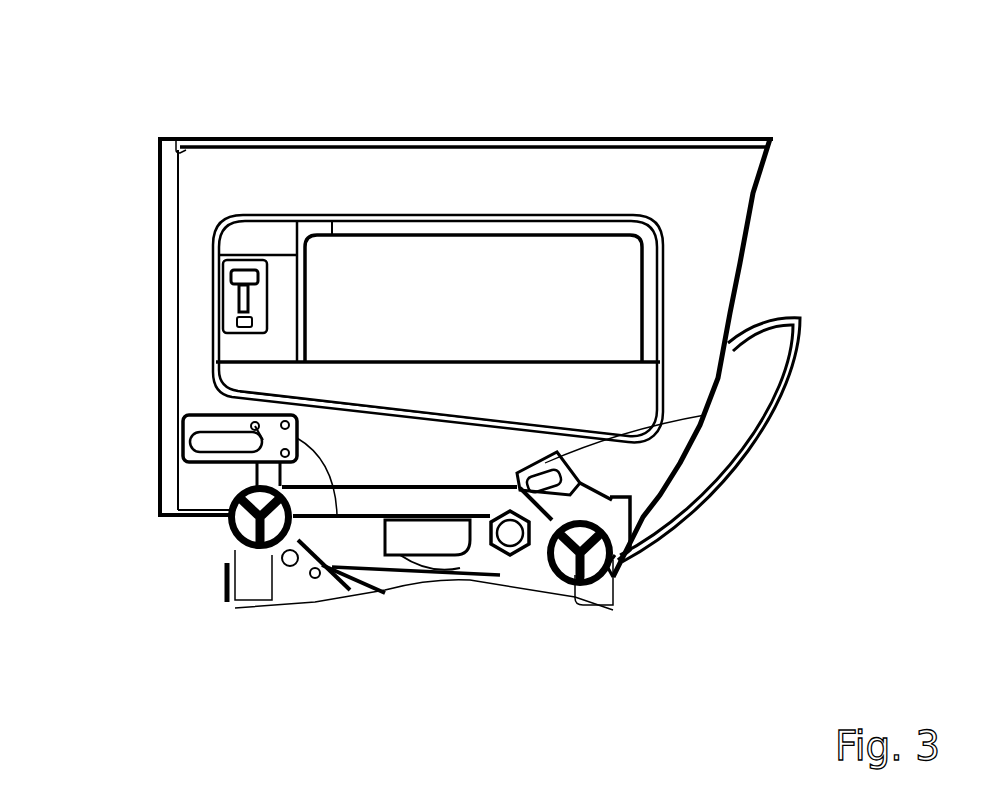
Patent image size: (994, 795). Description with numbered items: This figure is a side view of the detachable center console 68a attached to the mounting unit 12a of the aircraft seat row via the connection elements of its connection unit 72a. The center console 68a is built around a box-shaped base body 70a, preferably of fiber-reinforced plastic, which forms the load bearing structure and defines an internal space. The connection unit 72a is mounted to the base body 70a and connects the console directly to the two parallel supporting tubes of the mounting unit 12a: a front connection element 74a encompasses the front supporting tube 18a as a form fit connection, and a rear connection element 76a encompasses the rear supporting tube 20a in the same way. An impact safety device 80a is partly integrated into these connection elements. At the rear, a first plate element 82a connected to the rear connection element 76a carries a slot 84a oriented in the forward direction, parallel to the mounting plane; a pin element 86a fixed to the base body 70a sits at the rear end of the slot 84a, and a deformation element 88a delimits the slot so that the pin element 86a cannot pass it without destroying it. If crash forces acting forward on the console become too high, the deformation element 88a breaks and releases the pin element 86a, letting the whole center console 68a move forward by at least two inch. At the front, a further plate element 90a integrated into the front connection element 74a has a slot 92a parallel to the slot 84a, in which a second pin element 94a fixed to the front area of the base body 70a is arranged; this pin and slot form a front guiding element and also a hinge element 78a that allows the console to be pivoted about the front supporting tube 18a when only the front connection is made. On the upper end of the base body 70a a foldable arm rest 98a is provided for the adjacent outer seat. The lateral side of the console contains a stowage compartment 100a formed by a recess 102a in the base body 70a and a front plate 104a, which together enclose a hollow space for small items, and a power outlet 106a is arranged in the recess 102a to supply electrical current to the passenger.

The mounting unit 12a is at (172, 545).
The front supporting tube 18a is at (268, 555).
The rear supporting tube 20a is at (578, 592).
The center console 68a is at (400, 110).
The base body 70a is at (172, 277).
The connection unit 72a is at (147, 475).
The front connection element 74a is at (207, 496).
The rear connection element 76a is at (638, 520).
The hinge element 78a is at (319, 576).
The impact safety device 80a is at (690, 483).
The first plate element 82a is at (635, 467).
The slot 84a is at (540, 505).
The pin element 86a is at (607, 517).
The deformation element 88a is at (560, 498).
The further plate element 90a is at (200, 430).
The slot 92a is at (187, 450).
The second pin element 94a is at (195, 440).
The foldable arm rest 98a is at (202, 137).
The stowage compartment 100a is at (487, 240).
The recess 102a is at (597, 283).
The front plate 104a is at (597, 390).
The power outlet 106a is at (247, 258).